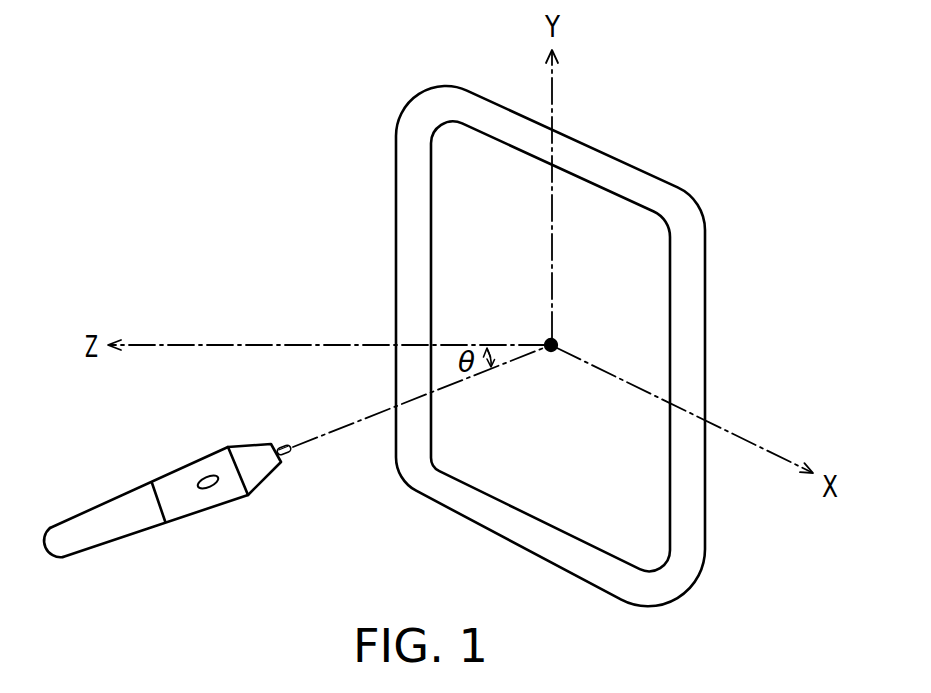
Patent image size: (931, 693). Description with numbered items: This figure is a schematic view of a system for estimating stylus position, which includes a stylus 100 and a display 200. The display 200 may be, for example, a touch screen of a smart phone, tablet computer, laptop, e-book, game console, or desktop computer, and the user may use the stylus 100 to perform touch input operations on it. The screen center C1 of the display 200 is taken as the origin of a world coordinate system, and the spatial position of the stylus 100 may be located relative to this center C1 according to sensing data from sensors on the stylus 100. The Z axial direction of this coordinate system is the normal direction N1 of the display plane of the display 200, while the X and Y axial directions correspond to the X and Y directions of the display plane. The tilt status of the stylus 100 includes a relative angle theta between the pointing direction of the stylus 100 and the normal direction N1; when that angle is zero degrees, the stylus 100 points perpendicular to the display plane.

The stylus 100 is at (137, 498).
The display 200 is at (698, 206).
The screen center C1 is at (556, 341).
The normal direction N1 is at (213, 345).